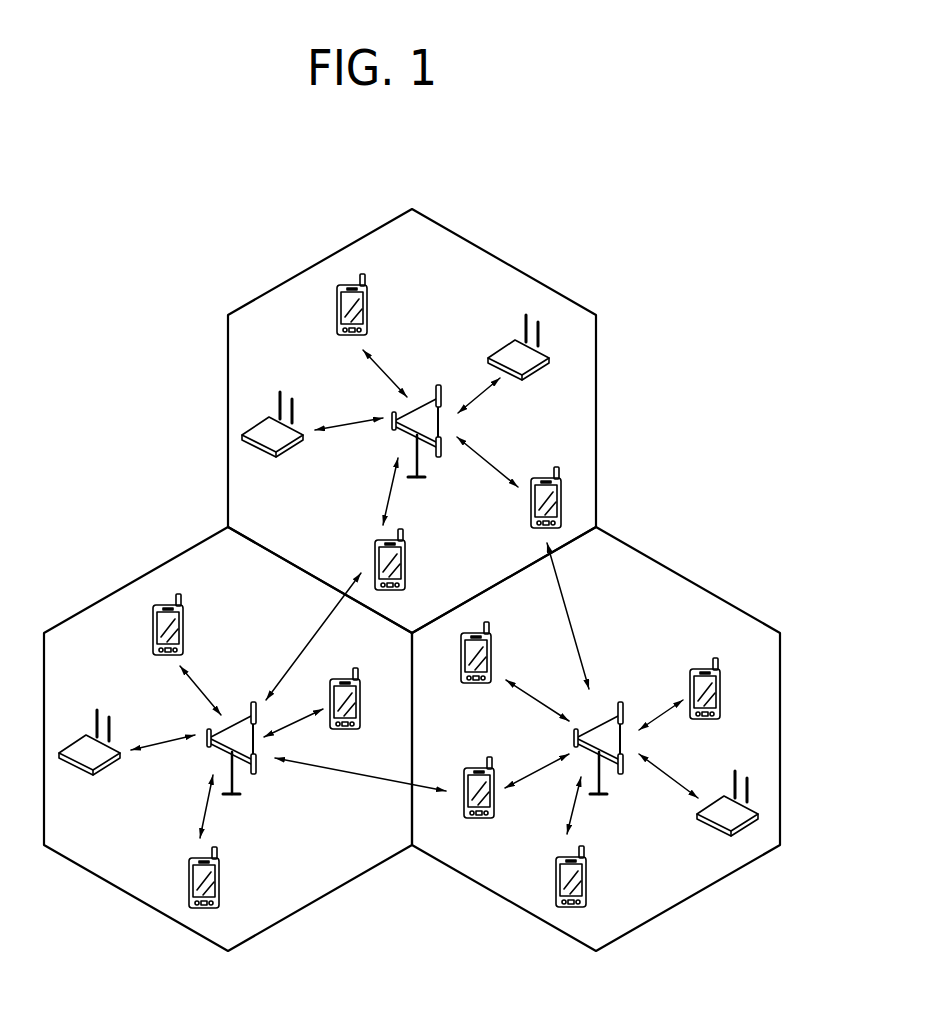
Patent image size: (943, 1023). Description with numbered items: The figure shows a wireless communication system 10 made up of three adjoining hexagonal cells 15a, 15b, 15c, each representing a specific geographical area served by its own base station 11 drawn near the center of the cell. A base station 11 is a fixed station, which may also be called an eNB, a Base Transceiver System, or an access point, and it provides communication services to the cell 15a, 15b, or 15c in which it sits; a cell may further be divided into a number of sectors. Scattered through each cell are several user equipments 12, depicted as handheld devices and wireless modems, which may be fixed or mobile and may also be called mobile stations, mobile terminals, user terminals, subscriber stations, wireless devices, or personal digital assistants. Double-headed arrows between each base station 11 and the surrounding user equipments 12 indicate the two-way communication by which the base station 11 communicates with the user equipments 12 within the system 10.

The wireless communication system 10 is at (412, 580).
The base station 11 is at (436, 386).
The user equipment 12 is at (367, 306).
The cell 15a is at (597, 411).
The cell 15b is at (714, 595).
The cell 15c is at (115, 594).